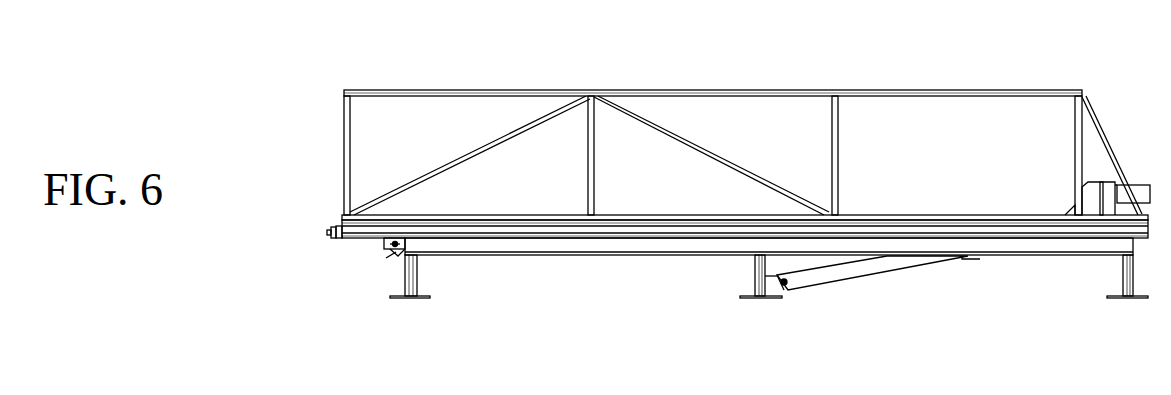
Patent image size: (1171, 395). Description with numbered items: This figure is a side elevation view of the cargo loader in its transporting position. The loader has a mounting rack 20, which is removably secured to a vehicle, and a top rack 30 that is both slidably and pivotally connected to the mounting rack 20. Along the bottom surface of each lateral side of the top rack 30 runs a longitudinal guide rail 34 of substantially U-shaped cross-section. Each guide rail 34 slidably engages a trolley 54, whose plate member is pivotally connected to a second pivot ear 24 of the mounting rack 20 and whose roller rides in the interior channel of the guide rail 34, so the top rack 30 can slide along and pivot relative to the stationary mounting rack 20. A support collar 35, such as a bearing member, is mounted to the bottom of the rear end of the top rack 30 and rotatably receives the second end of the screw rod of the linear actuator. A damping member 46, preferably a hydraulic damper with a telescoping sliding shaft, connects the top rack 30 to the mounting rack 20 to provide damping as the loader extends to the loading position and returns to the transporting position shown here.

The mounting rack 20 is at (1040, 258).
The second pivot ear 24 is at (396, 255).
The top rack 30 is at (762, 90).
The longitudinal guide rail 34 is at (493, 230).
The support collar 35 is at (336, 225).
The damping member 46 is at (843, 289).
The trolley 54 is at (383, 247).